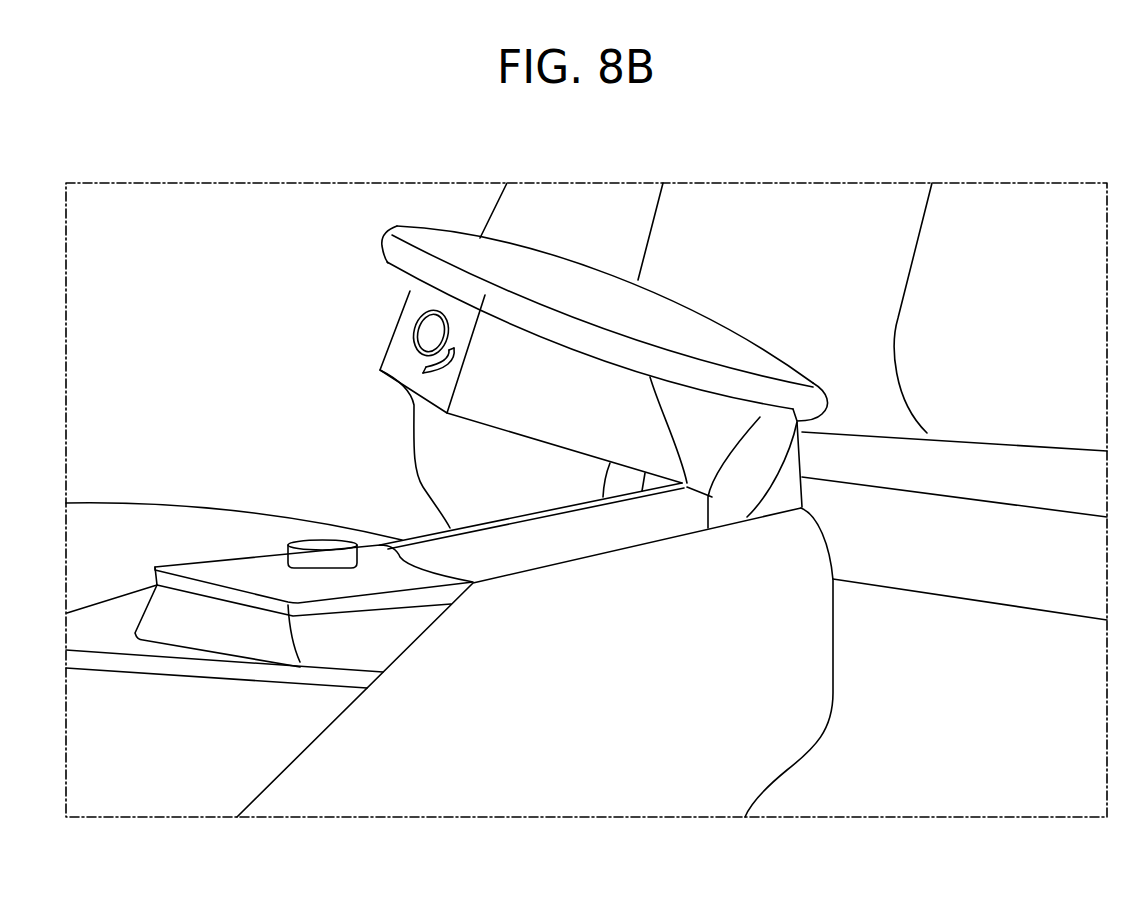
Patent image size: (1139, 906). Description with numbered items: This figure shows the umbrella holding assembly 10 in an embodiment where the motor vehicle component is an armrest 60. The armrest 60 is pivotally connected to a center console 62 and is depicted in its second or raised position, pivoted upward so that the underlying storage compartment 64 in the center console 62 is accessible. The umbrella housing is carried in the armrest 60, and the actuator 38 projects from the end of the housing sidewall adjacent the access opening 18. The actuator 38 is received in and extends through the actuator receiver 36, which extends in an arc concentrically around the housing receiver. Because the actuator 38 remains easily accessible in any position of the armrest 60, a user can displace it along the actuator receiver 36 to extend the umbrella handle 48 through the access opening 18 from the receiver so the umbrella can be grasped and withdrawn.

The vehicle seating assembly 10 is at (402, 175).
The access opening 18 is at (415, 348).
The actuator receiver 36 is at (425, 373).
The actuator 38 is at (455, 355).
The umbrella handle 48 is at (425, 332).
The armrest 60 is at (660, 310).
The center console 62 is at (697, 723).
The storage compartment 64 is at (567, 548).